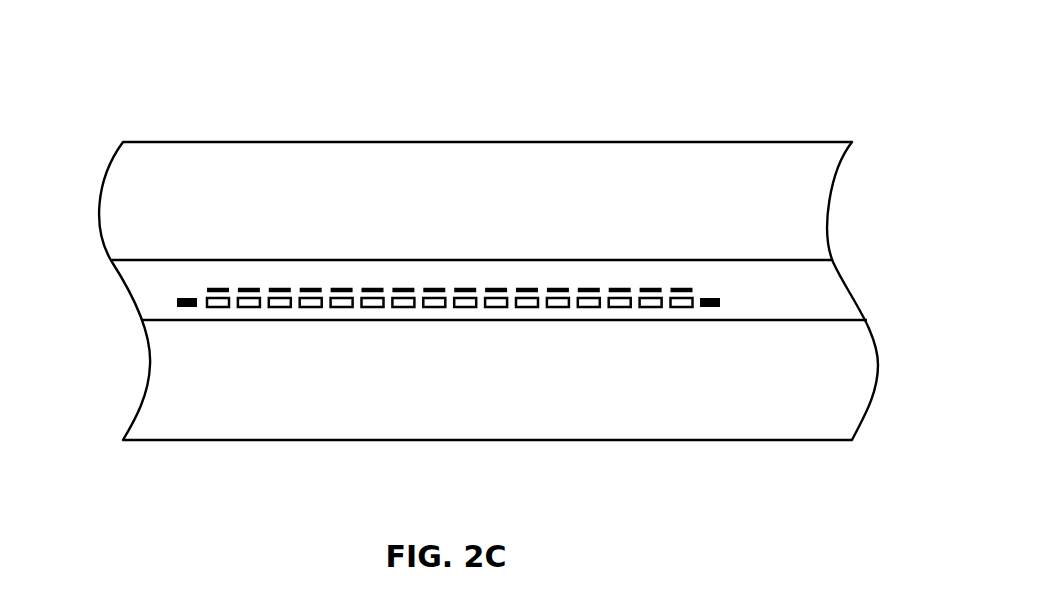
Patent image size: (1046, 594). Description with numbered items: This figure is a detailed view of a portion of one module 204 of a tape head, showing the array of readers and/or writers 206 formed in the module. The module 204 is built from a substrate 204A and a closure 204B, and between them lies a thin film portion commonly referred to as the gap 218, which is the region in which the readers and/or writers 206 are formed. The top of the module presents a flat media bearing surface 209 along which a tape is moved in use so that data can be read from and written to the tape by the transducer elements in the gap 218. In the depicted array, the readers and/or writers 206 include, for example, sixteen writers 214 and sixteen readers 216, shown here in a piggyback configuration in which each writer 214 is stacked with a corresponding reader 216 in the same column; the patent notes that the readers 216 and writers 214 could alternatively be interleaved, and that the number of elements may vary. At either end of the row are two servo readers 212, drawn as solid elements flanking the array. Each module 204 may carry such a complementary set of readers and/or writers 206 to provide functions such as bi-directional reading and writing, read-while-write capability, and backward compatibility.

The module 204 is at (141, 104).
The substrate 204A is at (243, 142).
The closure 204B is at (307, 440).
The readers and/or writers 206 is at (521, 291).
The media bearing surface 209 is at (400, 220).
The servo readers 212 is at (177, 300).
The writers 214 is at (587, 287).
The readers 216 is at (588, 307).
The gap 218 is at (852, 290).